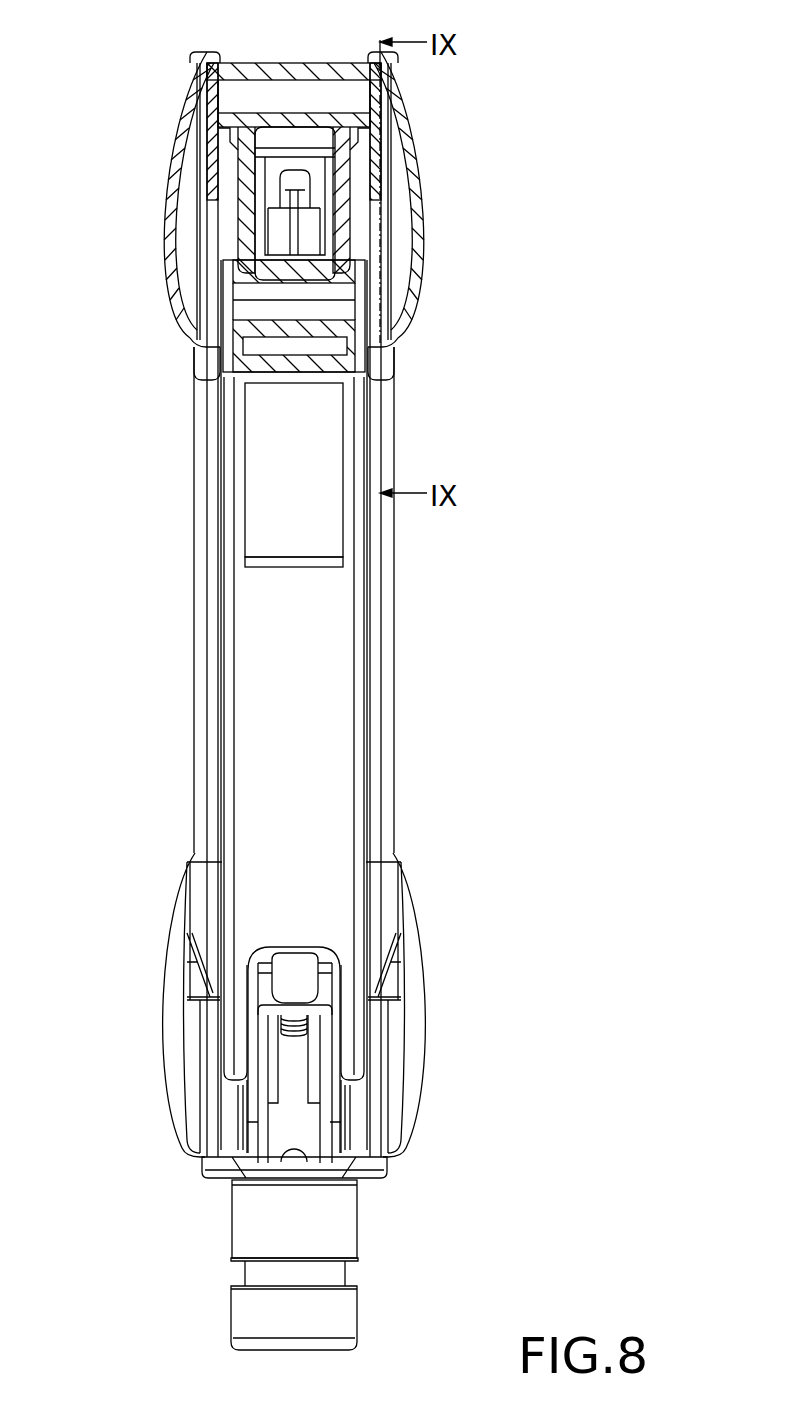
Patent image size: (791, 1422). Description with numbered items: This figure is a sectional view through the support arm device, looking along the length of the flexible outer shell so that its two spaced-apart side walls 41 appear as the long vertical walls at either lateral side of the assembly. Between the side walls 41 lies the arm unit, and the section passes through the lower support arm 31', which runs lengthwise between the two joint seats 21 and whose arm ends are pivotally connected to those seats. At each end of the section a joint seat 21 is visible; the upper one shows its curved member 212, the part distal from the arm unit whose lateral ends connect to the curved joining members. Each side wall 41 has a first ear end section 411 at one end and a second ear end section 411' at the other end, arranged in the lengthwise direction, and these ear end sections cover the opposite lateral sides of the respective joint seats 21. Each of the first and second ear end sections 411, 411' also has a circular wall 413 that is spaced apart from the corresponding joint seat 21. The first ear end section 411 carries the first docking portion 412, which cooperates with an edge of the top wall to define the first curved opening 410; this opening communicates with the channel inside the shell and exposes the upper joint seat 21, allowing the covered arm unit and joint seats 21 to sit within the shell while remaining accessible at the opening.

The joint seat 21 is at (207, 140).
The lower support arm 31' is at (345, 645).
The side wall 41 is at (194, 590).
The curved member 212 is at (279, 62).
The first curved opening 410 is at (340, 57).
The first ear end section 411 is at (307, 199).
The second ear end section 411' is at (300, 1005).
The first docking portion 412 is at (207, 350).
The circular wall 413 is at (170, 232).